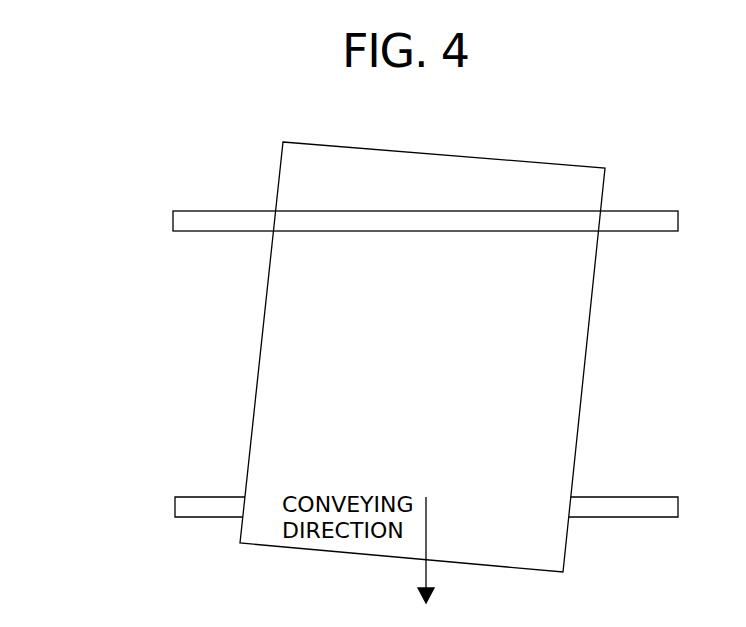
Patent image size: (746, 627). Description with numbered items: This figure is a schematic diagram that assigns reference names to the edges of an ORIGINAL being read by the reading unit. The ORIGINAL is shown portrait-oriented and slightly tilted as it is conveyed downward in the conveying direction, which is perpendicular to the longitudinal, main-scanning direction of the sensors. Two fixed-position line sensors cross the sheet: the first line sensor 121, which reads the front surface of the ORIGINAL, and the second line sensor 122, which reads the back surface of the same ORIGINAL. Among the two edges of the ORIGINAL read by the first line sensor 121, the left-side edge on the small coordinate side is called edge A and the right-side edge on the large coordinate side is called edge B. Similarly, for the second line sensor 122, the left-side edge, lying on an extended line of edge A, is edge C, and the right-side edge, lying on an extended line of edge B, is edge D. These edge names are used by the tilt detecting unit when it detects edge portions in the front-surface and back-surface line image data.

The first line sensor 121 is at (660, 210).
The second line sensor 122 is at (658, 492).
The original ORIGINAL is at (557, 142).
The edge A is at (273, 218).
The edge B is at (600, 229).
The edge C is at (240, 507).
The edge D is at (573, 505).